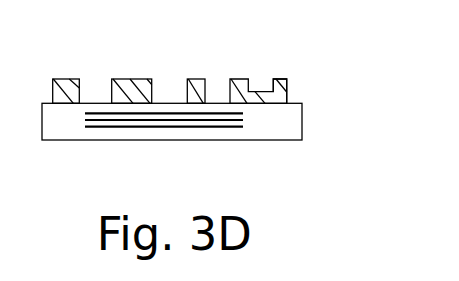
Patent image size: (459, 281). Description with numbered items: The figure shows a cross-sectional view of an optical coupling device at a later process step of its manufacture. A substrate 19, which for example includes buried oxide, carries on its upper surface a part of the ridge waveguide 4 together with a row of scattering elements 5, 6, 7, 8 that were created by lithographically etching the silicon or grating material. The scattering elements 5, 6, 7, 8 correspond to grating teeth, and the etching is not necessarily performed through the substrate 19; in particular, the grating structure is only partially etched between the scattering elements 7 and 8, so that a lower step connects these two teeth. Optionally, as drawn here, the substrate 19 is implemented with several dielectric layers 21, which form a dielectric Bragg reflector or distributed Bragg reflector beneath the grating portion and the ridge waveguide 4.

The ridge waveguide 4 is at (72, 79).
The scattering element 5 is at (137, 79).
The scattering element 6 is at (195, 79).
The scattering element 7 is at (238, 79).
The scattering element 8 is at (280, 79).
The substrate 19 is at (298, 119).
The dielectric layers 21 is at (192, 113).